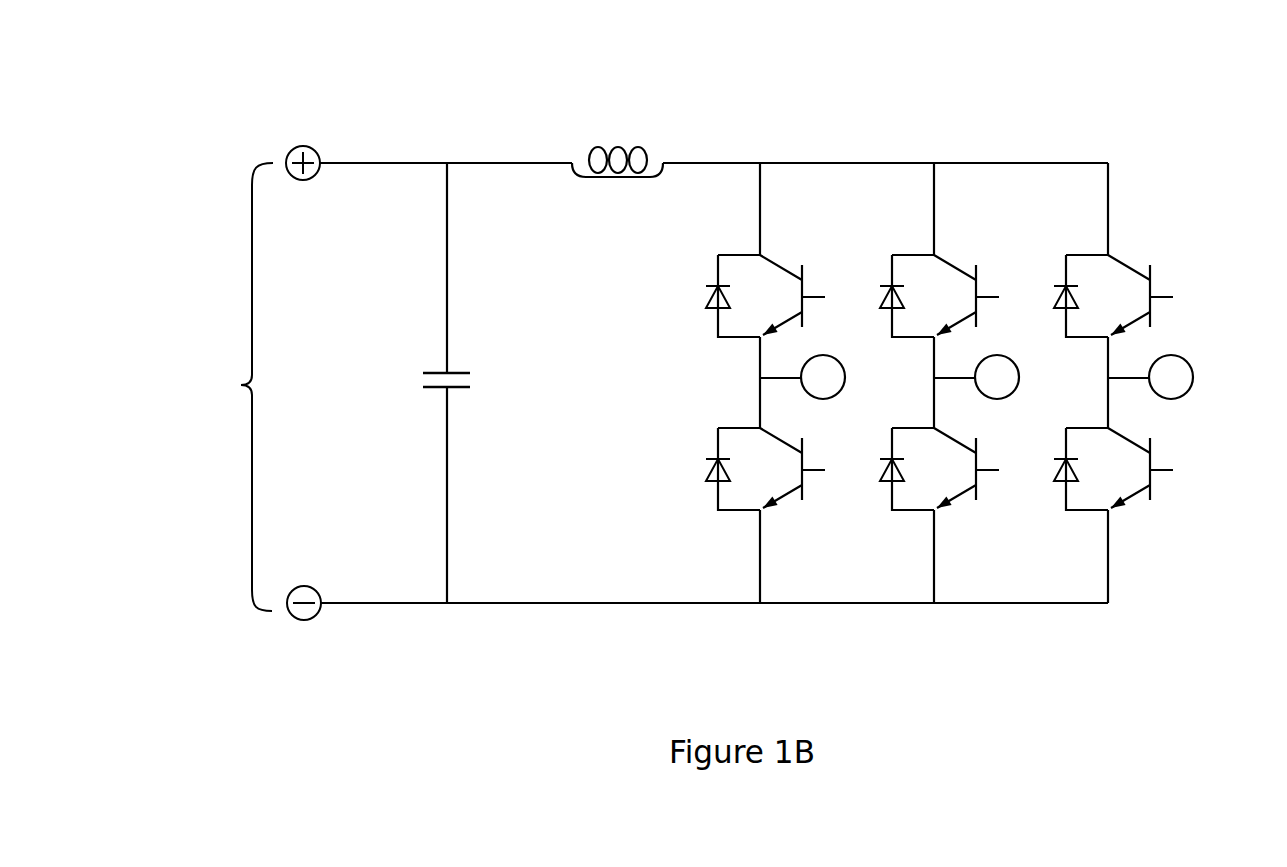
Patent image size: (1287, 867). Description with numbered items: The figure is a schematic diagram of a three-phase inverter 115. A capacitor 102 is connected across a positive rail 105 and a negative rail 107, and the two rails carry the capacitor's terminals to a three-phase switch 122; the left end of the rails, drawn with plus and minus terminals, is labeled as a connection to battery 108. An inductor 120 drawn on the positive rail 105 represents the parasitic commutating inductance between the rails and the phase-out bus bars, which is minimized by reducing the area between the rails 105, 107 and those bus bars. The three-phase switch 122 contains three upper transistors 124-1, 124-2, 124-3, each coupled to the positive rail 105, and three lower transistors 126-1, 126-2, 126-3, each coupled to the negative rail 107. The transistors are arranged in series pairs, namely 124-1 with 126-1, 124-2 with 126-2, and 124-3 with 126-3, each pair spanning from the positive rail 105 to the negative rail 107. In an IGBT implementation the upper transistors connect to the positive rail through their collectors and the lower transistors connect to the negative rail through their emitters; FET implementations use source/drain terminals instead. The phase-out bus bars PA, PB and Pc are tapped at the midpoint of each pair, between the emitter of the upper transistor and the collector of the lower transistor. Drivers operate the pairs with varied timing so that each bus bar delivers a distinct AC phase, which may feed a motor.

The three-phase inverter 115 is at (284, 34).
The positive rail 105 is at (480, 163).
The negative rail 107 is at (492, 604).
The inductor 120 is at (637, 148).
The capacitor 102 is at (379, 383).
The battery connection 108 is at (210, 387).
The three-phase switch 122 is at (1112, 148).
The transistor 124-1 is at (772, 258).
The transistor 124-2 is at (948, 262).
The transistor 124-3 is at (1125, 263).
The transistor 126-1 is at (787, 502).
The transistor 126-2 is at (958, 502).
The transistor 126-3 is at (1133, 502).